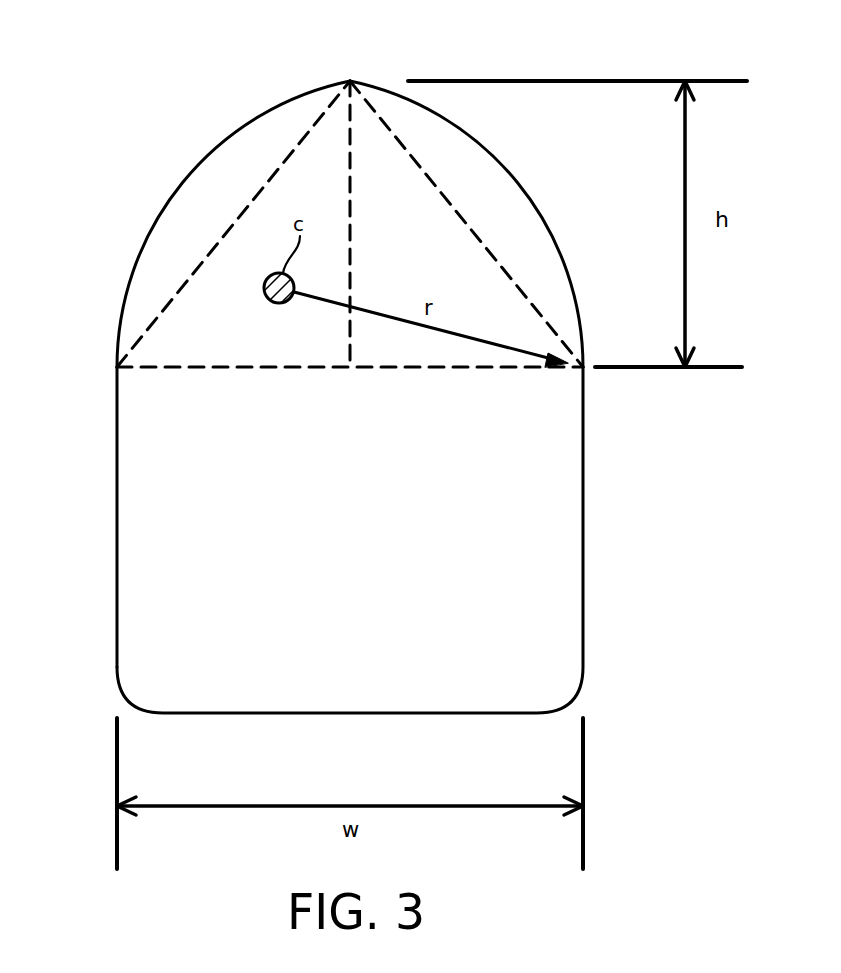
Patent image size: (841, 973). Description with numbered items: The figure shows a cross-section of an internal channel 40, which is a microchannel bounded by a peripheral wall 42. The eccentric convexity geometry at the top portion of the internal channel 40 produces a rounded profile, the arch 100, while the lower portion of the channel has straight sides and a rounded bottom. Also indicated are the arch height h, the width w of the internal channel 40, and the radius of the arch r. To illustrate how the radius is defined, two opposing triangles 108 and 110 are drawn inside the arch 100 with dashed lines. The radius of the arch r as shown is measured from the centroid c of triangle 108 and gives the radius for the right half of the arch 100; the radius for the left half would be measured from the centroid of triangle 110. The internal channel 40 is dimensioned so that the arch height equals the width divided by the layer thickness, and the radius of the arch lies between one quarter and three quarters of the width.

The arch 100 is at (299, 367).
The triangle 108 is at (220, 243).
The triangle 110 is at (397, 129).
The internal channel 40 is at (299, 540).
The peripheral wall 42 is at (117, 490).